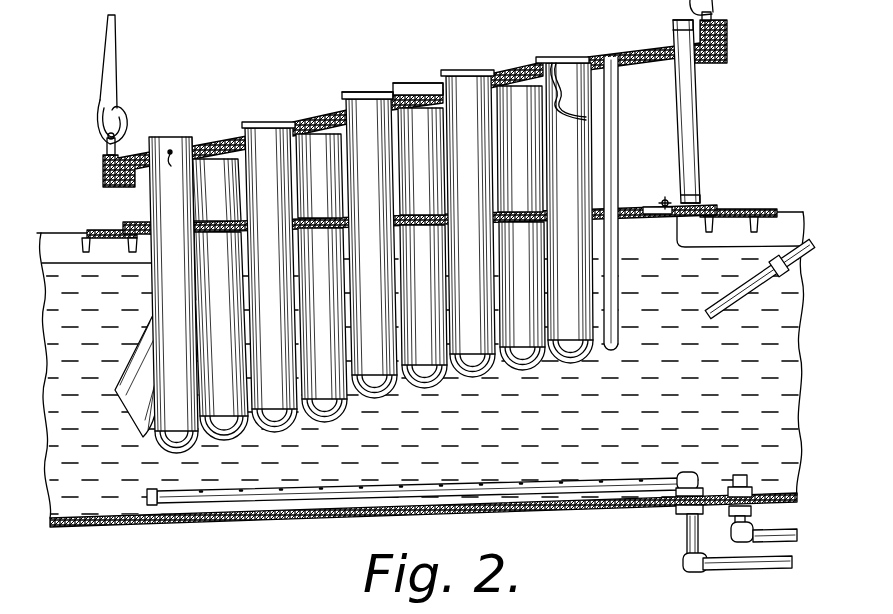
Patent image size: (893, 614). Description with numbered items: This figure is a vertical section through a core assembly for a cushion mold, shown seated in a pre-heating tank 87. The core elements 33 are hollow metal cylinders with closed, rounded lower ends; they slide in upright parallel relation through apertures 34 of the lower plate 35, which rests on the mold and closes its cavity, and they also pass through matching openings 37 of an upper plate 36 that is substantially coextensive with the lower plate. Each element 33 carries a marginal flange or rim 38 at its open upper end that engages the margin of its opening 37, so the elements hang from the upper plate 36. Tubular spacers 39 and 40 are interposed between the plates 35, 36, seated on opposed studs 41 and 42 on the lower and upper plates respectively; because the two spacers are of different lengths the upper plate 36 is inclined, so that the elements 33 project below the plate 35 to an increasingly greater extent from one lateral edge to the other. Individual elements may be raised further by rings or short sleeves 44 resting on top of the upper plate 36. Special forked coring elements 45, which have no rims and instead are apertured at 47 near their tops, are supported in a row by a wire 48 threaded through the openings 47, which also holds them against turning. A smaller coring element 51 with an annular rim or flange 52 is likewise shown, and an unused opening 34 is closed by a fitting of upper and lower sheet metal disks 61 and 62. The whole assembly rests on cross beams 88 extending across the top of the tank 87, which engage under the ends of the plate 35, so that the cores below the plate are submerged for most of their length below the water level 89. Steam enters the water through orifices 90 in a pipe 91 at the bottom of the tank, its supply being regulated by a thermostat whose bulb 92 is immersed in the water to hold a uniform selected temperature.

The core elements 33 is at (360, 103).
The apertures of the plate 34 is at (355, 222).
The plate 35 is at (709, 210).
The upper plate 36 is at (216, 142).
The openings of the upper plate 37 is at (373, 112).
The marginal flanges or rims 38 is at (538, 60).
The spacer 39 is at (160, 210).
The spacer 40 is at (699, 110).
The stud 41 is at (684, 193).
The stud 42 is at (678, 58).
The rings or short sleeves 44 is at (343, 100).
The forked coring elements 45 is at (165, 212).
The apertures 47 is at (184, 145).
The wire 48 is at (171, 150).
The coring elements 51 is at (610, 157).
The annular rim or flange 52 is at (593, 56).
The upper sheet metal disk 61 is at (659, 199).
The lower sheet metal disk 62 is at (678, 243).
The tank 87 is at (268, 521).
The cross beams 88 is at (92, 231).
The water level 89 is at (786, 238).
The orifices 90 is at (443, 486).
The pipe 91 is at (621, 483).
The bulb 92 is at (737, 301).